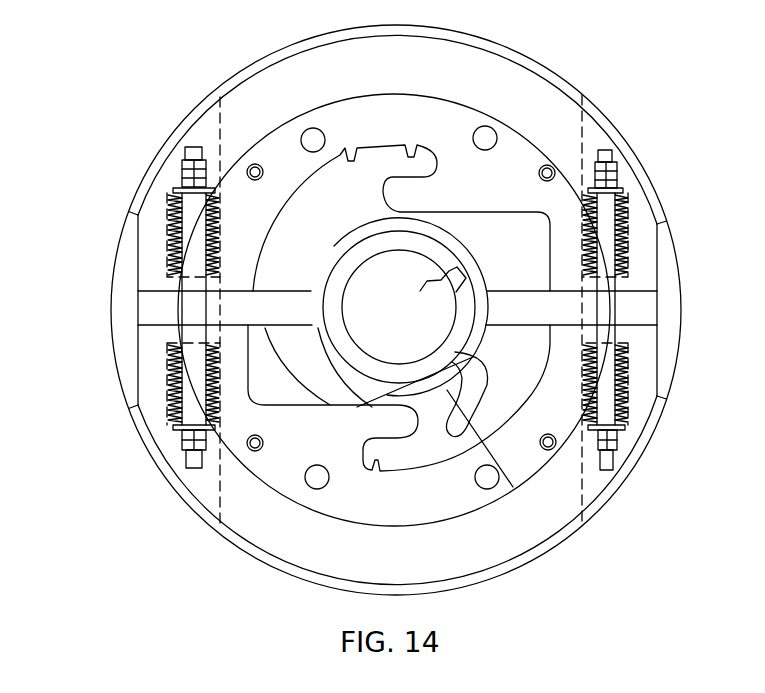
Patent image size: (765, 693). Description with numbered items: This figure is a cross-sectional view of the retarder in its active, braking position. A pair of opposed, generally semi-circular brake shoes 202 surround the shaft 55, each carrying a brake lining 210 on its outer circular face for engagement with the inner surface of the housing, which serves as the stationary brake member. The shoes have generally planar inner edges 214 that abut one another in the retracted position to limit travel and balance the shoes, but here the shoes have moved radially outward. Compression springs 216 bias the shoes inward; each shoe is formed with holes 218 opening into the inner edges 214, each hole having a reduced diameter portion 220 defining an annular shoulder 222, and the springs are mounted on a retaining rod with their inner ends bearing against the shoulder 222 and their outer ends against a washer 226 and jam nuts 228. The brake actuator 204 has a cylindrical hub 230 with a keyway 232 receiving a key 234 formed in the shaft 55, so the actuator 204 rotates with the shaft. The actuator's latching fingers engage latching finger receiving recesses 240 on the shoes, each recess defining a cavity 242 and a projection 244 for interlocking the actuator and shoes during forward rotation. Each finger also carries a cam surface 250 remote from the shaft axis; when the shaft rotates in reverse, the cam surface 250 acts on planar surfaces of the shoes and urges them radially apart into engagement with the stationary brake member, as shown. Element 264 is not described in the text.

The shaft 55 is at (388, 330).
The brake shoes 202 is at (480, 207).
The brake actuator 204 is at (323, 257).
The brake lining 210 is at (622, 190).
The inner edges 214 is at (157, 324).
The compression springs 216 is at (627, 265).
The holes 218 is at (627, 232).
The reduced diameter portion 220 is at (222, 337).
The annular shoulder 222 is at (580, 343).
The washer 226 is at (628, 424).
The jam nuts 228 is at (613, 163).
The cylindrical hub 230 is at (358, 257).
The keyway 232 is at (435, 292).
The key 234 is at (540, 372).
The latching finger receiving recesses 240 is at (350, 153).
The cavity 242 is at (417, 146).
The projection 244 is at (393, 418).
The cam surface 250 is at (492, 228).
The strap 264 is at (510, 485).